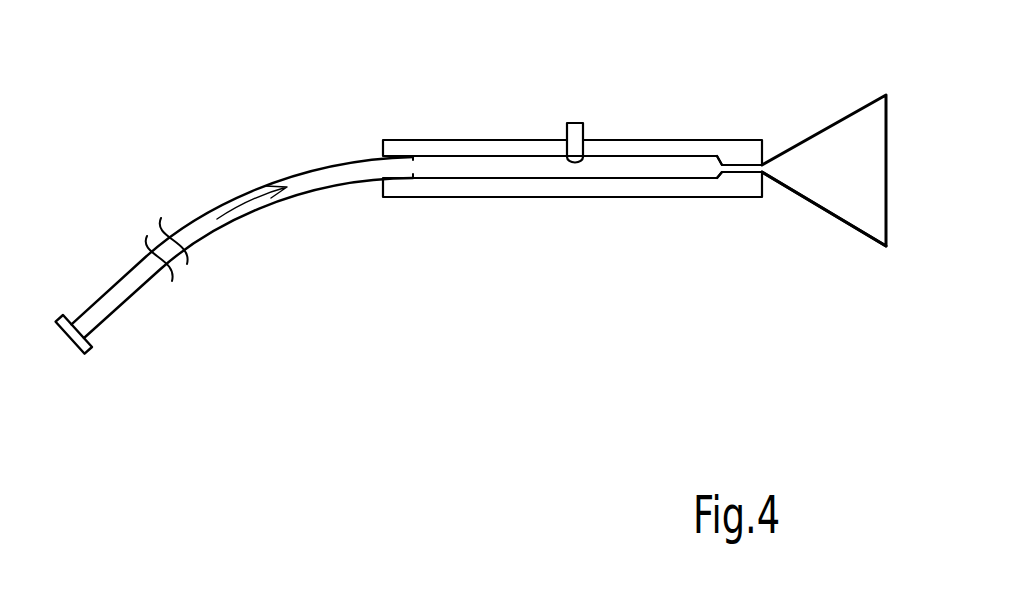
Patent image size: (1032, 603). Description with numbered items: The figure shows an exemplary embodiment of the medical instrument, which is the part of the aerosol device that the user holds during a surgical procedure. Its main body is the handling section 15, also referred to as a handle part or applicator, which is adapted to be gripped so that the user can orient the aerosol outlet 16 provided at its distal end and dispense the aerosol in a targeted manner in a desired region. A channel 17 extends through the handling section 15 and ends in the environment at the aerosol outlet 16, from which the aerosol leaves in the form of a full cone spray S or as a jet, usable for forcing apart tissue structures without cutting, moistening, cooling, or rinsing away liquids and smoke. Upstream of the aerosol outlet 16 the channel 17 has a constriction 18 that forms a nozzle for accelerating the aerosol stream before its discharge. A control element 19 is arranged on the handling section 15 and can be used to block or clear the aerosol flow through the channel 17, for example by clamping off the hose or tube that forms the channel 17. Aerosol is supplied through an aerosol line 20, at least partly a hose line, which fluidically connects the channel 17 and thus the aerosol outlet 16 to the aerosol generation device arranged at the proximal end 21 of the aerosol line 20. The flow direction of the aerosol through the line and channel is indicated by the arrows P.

The handling section 15 is at (515, 197).
The aerosol outlet 16 is at (774, 135).
The channel 17 is at (625, 167).
The constriction 18 is at (700, 176).
The control element 19 is at (582, 100).
The aerosol line 20 is at (253, 213).
The proximal end 21 is at (108, 380).
The arrows P is at (244, 216).
The full cone spray S is at (837, 217).